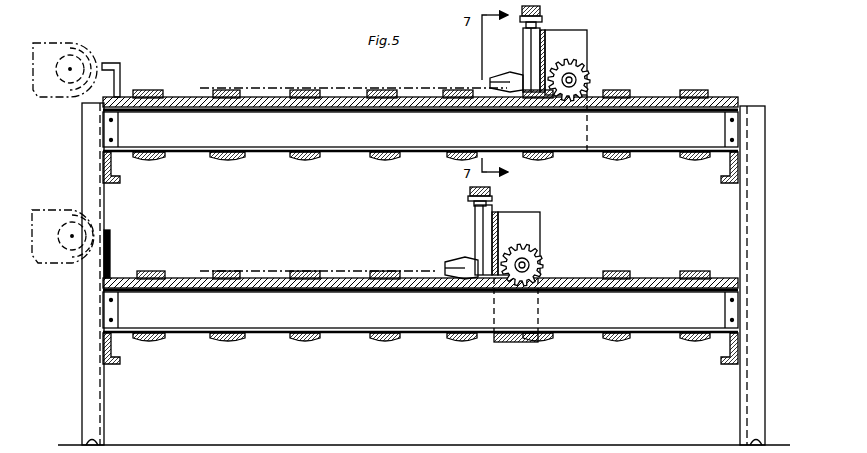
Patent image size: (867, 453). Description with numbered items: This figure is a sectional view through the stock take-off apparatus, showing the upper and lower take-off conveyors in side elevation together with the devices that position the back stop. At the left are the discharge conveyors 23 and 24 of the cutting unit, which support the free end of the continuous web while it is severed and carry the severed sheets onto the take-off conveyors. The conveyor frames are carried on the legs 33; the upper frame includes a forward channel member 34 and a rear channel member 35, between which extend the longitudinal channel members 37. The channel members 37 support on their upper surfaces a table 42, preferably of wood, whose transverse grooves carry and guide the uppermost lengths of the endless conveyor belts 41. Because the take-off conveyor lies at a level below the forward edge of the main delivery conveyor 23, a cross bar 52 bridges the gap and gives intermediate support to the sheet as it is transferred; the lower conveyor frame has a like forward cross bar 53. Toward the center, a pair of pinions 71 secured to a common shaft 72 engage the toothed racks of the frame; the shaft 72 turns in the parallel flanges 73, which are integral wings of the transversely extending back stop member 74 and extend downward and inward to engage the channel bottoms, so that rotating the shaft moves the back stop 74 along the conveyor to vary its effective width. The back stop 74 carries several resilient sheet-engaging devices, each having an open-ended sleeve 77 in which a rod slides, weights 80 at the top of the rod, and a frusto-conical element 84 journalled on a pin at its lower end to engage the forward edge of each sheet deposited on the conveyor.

The discharge conveyor 23 is at (45, 45).
The discharge conveyor 24 is at (38, 257).
The legs 33 is at (97, 413).
The forward bar or channel member 34 is at (112, 172).
The rear bar or channel member 35 is at (733, 165).
The longitudinal channel members 37 is at (262, 133).
The endless conveyor belts 41 is at (151, 95).
The table 42 is at (353, 97).
The cross bar 52 is at (122, 78).
The forward cross bar 53 is at (110, 263).
The pinions 71 is at (590, 73).
The shaft 72 is at (577, 81).
The flanges 73 is at (575, 43).
The back stop member 74 is at (543, 43).
The open-ended sleeve 77 is at (533, 41).
The weights 80 is at (472, 202).
The frusto-conical element 84 is at (506, 76).